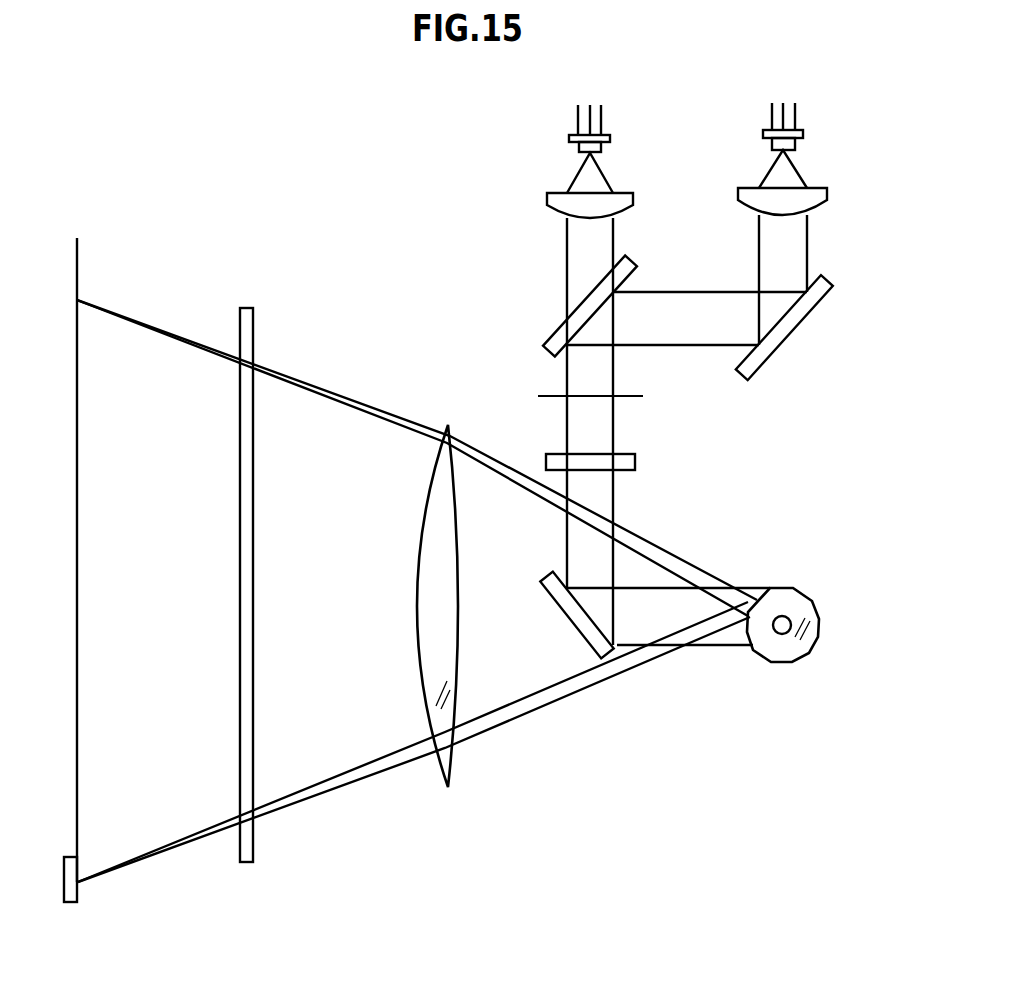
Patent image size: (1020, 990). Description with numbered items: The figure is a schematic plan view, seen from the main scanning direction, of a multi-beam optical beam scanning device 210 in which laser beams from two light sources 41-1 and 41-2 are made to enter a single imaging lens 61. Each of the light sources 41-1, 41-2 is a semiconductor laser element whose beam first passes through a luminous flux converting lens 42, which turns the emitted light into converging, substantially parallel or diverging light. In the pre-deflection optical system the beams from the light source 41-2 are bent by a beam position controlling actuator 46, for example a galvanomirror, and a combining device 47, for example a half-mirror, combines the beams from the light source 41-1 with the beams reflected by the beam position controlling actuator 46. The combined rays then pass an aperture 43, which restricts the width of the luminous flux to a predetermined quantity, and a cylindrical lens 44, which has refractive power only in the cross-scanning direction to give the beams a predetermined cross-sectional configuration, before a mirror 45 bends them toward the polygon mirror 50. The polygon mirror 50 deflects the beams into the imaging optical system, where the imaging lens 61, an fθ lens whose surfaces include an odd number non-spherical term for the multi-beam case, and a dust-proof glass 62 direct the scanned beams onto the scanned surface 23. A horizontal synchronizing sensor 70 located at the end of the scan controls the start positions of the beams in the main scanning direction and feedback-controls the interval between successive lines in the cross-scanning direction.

The optical beam scanning device 210 is at (276, 222).
The screen / scanned surface 23 is at (78, 250).
The horizontal synchronizing sensor 70 is at (70, 903).
The dust-proof glass 62 is at (254, 335).
The imaging lens 61 is at (417, 575).
The polygon mirror 50 is at (784, 588).
The light source 41-1 is at (569, 138).
The light source 41-2 is at (763, 134).
The luminous flux converting lens 42 is at (547, 203).
The combining device 47 is at (553, 330).
The beam position controlling actuator 46 is at (796, 335).
The aperture 43 is at (550, 394).
The cylindrical lens 44 is at (546, 463).
The mirror 45 is at (552, 603).